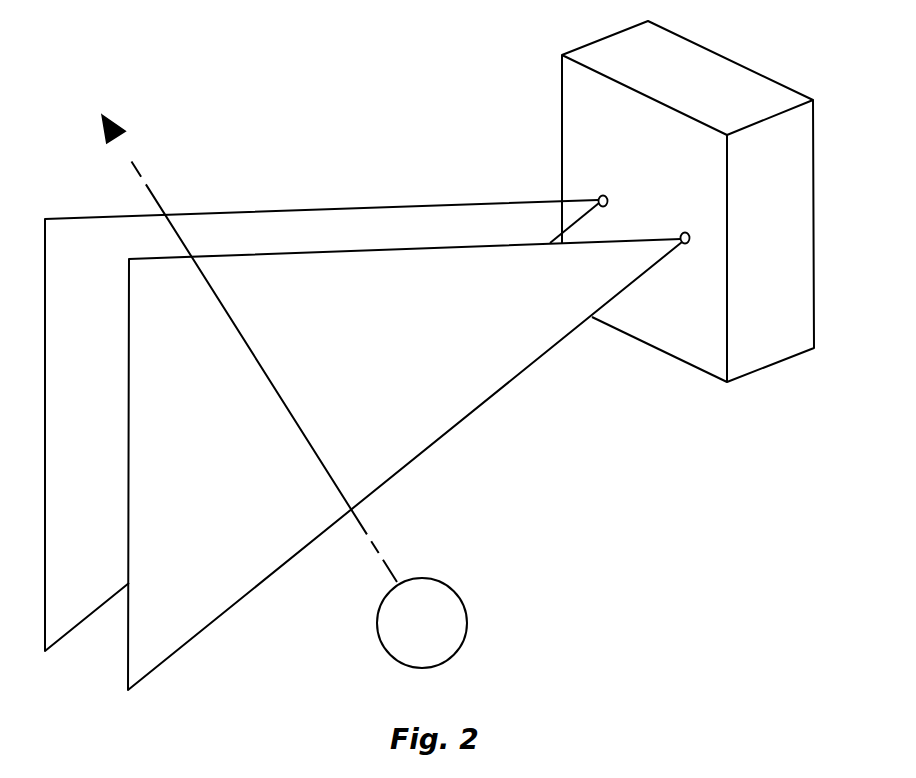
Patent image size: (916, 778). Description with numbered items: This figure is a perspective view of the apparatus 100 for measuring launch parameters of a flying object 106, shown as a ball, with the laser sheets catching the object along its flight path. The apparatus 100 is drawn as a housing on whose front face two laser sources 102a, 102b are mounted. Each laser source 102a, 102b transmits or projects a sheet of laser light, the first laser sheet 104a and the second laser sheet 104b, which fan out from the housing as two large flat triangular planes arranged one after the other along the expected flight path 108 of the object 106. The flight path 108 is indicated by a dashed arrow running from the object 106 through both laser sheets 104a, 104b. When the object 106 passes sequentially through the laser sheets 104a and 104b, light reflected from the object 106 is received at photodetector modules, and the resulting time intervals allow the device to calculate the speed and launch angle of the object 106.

The apparatus 100 is at (707, 73).
The laser source 102a is at (598, 197).
The laser source 102b is at (690, 240).
The laser sheet 104a is at (393, 206).
The laser sheet 104b is at (510, 383).
The flying object 106 is at (468, 617).
The expected flight path 108 is at (145, 180).